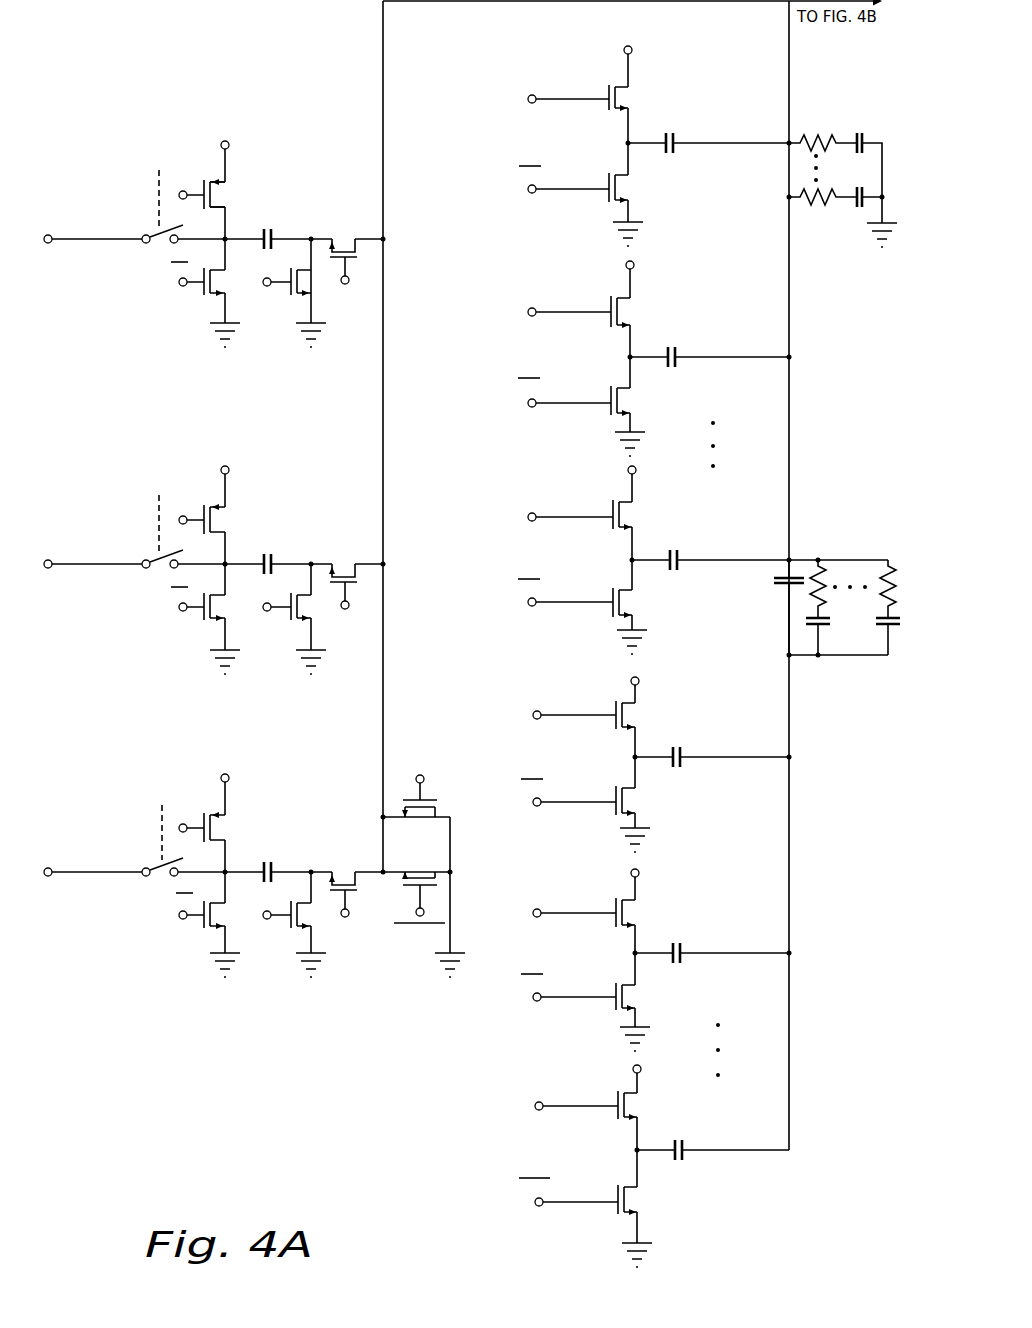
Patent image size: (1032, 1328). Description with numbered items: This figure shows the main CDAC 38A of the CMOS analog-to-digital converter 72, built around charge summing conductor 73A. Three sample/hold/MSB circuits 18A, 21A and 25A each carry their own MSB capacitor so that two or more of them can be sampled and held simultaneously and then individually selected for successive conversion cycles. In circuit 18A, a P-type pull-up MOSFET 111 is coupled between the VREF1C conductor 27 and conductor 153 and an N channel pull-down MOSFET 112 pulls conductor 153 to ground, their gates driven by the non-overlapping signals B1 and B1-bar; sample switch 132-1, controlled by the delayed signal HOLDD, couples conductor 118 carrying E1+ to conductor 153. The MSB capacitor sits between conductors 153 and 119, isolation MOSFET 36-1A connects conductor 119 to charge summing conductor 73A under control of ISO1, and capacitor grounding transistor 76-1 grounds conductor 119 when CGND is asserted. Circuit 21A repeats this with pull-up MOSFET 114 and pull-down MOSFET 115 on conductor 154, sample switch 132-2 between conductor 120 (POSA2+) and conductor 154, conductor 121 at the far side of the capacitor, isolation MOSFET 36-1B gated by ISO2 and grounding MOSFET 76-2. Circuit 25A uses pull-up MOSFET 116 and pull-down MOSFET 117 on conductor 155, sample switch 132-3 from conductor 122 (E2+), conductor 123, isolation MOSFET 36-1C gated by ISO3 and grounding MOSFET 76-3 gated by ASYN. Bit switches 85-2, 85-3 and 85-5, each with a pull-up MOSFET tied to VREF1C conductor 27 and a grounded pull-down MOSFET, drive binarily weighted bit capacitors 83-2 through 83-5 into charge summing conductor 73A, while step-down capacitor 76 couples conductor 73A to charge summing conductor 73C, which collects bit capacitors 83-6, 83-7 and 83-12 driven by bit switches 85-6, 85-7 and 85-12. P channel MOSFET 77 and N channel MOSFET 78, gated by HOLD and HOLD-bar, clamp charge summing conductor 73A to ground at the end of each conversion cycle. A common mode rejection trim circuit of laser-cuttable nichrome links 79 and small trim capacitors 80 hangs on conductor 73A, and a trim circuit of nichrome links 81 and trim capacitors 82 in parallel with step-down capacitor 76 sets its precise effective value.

The main CDAC 38A is at (245, 70).
The P-type pull-up MOSFET 111 is at (206, 192).
The VREF1C conductor 27 is at (229, 148).
The sample/hold/MSB circuit 18A is at (243, 205).
The conductor 153 is at (222, 237).
The conductor 119 is at (310, 238).
The isolation MOSFET 36-1A is at (352, 246).
The conductor 118 is at (48, 244).
The sample switch 132-1 is at (156, 243).
The N channel pull-down MOSFET 112 is at (200, 290).
The capacitor grounding transistor 76-1 is at (295, 290).
The charge summing conductor 73A is at (384, 338).
The sample/hold/MSB circuit 21A is at (185, 468).
The P channel pull-up MOSFET 114 is at (206, 515).
The conductor 154 is at (222, 562).
The conductor 121 is at (311, 562).
The isolation MOSFET 36-1B is at (352, 571).
The conductor 120 is at (48, 569).
The sample switch 132-2 is at (156, 568).
The N channel pull-down bit switch MOSFET 115 is at (200, 615).
The capacitor grounding MOSFET 76-2 is at (295, 615).
The sample/hold/MSB circuit 25A is at (193, 768).
The P channel pull-up MOSFET 116 is at (206, 823).
The conductor 155 is at (225, 870).
The conductor 123 is at (311, 870).
The isolation MOSFET 36-1C is at (352, 880).
The conductor 122 is at (48, 877).
The sample switch 132-3 is at (156, 876).
The N channel pull-down MOSFET 117 is at (200, 923).
The capacitor grounding MOSFET 76-3 is at (296, 925).
The P channel MOSFET 77 is at (432, 812).
The N channel MOSFET 78 is at (435, 870).
The analog-to-digital converter 72 is at (230, 1042).
The bit switch 85-2 is at (590, 72).
The bit capacitor 83-2 is at (675, 136).
The nichrome link 79 is at (822, 142).
The trim capacitor 80 is at (860, 135).
The bit switch 85-3 is at (578, 290).
The bit switch 85-5 is at (580, 492).
The bit capacitor 83-5 is at (683, 553).
The step-down capacitor 76 is at (785, 580).
The nichrome link 81 is at (816, 572).
The trim capacitor 82 is at (840, 628).
The bit switch 85-6 is at (593, 685).
The bit capacitor 83-6 is at (683, 754).
The charge summing conductor 73C is at (789, 838).
The bit switch 85-7 is at (598, 873).
The bit capacitor 83-7 is at (684, 950).
The bit switch 85-12 is at (595, 1078).
The bit capacitor 83-12 is at (684, 1146).